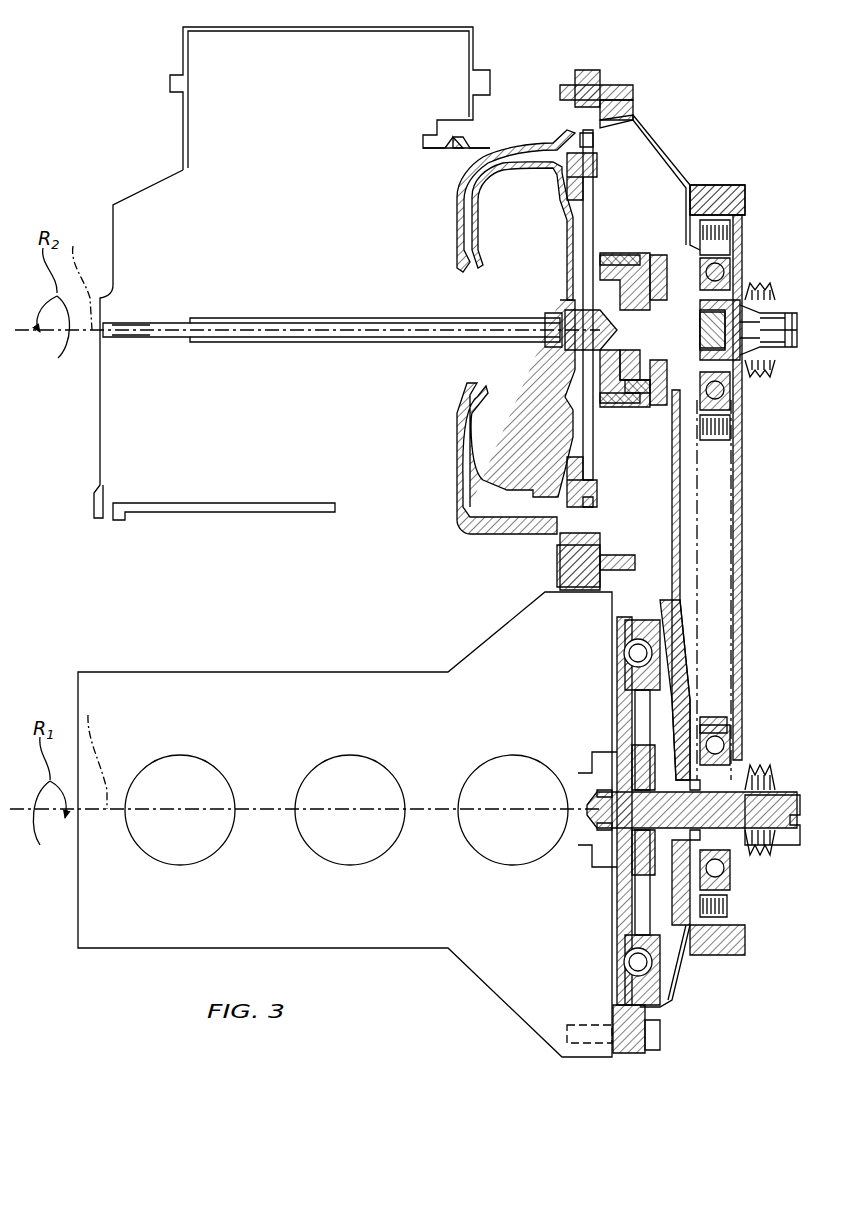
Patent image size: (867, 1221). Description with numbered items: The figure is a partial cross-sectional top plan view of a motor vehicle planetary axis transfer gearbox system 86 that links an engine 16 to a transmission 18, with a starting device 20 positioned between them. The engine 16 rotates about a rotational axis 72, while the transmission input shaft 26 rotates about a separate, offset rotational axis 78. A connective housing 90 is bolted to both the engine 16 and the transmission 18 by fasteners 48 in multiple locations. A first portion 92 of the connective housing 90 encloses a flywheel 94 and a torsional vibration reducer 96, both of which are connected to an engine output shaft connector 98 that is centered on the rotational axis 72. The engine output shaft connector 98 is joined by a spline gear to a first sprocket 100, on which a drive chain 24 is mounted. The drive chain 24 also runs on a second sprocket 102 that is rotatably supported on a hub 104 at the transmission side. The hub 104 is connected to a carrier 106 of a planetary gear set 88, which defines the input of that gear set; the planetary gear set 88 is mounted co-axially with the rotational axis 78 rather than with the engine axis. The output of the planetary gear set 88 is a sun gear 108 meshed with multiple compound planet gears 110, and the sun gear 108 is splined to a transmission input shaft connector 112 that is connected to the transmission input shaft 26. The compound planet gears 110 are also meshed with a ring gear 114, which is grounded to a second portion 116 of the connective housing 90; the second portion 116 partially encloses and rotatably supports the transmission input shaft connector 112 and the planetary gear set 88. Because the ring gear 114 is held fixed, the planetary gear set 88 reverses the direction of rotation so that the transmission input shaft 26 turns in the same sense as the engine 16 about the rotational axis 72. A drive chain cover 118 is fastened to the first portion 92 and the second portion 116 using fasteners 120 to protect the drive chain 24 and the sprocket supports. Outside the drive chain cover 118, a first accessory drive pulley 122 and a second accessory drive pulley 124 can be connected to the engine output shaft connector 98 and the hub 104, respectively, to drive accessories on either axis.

The engine 16 is at (233, 672).
The transmission 18 is at (490, 48).
The starting device 20 is at (560, 240).
The drive chain 24 is at (735, 535).
The transmission input shaft 26 is at (300, 318).
The fasteners 48 is at (557, 95).
The rotational axis 72 is at (95, 751).
The rotational axis 78 is at (79, 277).
The motor vehicle planetary axis transfer gearbox system 86 is at (672, 75).
The planetary gear set 88 is at (647, 245).
The connective housing 90 is at (640, 113).
The first portion 92 is at (678, 672).
The flywheel 94 is at (618, 650).
The torsional vibration reducer 96 is at (637, 680).
The engine output shaft connector 98 is at (773, 833).
The first sprocket 100 is at (710, 890).
The second sprocket 102 is at (735, 232).
The hub 104 is at (797, 345).
The carrier 106 is at (675, 280).
The sun gear 108 is at (687, 380).
The compound planet gears 110 is at (640, 403).
The transmission input shaft connector 112 is at (745, 295).
The ring gear 114 is at (657, 257).
The second portion 116 is at (608, 255).
The drive chain cover 118 is at (738, 487).
The fasteners 120 is at (742, 190).
The first accessory drive pulley 122 is at (780, 780).
The second accessory drive pulley 124 is at (763, 368).